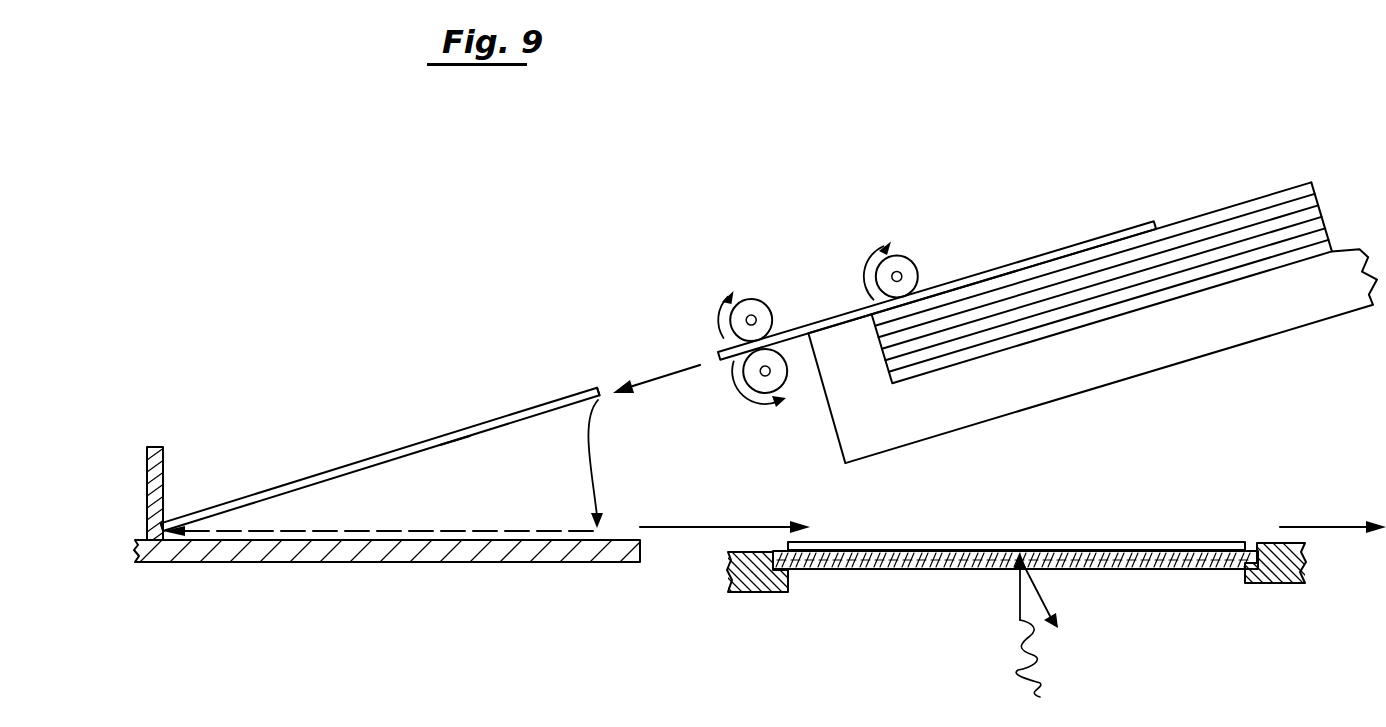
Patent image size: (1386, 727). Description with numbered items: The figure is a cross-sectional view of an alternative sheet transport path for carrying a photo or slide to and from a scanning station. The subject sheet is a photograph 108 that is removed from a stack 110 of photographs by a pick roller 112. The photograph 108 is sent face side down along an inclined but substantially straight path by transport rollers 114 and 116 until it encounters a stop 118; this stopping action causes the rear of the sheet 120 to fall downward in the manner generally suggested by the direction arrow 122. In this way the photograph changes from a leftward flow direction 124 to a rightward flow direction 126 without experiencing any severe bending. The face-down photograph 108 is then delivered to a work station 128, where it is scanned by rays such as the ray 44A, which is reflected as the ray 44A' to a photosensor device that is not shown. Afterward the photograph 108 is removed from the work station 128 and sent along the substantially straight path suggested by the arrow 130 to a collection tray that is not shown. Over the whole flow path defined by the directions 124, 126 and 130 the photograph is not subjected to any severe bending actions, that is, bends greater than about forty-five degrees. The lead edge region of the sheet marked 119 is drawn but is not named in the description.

The photograph 108 is at (832, 317).
The stack of photographs 110 is at (1215, 211).
The pick roller 112 is at (908, 256).
The transport roller 114 is at (748, 299).
The transport roller 116 is at (754, 392).
The stop 118 is at (163, 480).
The trailing edge of sheet 119 is at (457, 447).
The rear of the sheet 120 is at (525, 411).
The direction arrow 122 is at (597, 458).
The leftward flow direction 124 is at (665, 376).
The rightward flow direction 126 is at (730, 527).
The work station 128 is at (1139, 518).
The arrow 130 is at (867, 570).
The ray 44A is at (977, 625).
The reflected ray 44A' is at (1088, 593).